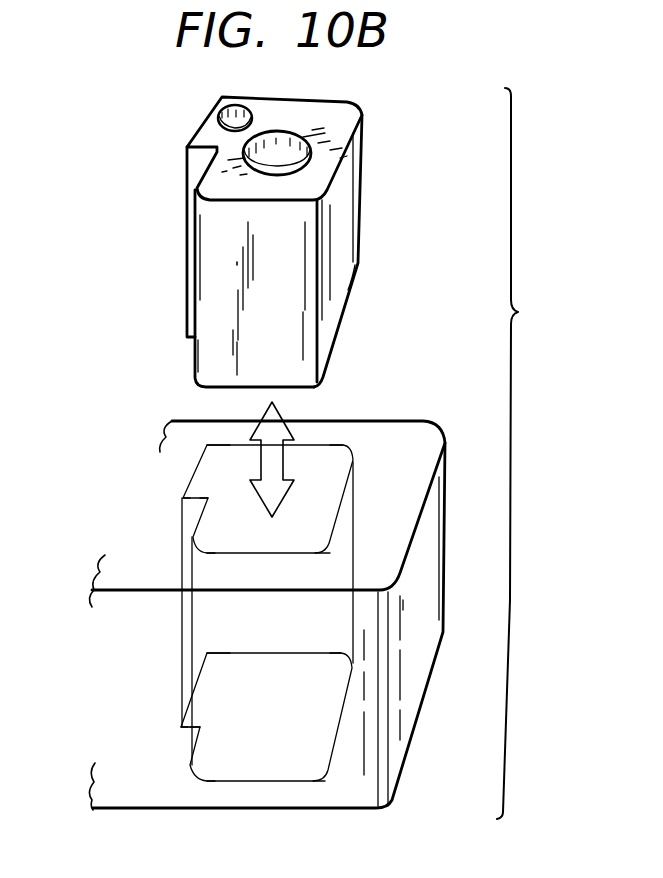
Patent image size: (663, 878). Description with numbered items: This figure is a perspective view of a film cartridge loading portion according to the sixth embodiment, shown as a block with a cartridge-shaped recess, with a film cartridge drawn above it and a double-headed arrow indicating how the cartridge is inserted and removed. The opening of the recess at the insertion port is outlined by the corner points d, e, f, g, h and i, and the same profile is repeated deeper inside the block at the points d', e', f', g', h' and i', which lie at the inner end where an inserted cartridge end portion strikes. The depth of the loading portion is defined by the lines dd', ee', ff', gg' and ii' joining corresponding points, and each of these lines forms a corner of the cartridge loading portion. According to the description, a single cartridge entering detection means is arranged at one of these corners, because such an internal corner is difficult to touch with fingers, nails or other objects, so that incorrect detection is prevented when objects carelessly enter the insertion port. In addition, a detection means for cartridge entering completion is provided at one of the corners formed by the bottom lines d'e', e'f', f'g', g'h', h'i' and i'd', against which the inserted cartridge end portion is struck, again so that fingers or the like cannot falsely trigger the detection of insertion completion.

The corner point d is at (210, 442).
The corner point e is at (350, 447).
The corner point f is at (324, 559).
The corner point g is at (205, 559).
The corner point h is at (213, 497).
The corner point i is at (181, 497).
The corner point d' is at (214, 642).
The corner point e' is at (352, 664).
The corner point f' is at (326, 777).
The corner point g' is at (191, 774).
The corner point h' is at (207, 727).
The corner point i' is at (176, 727).